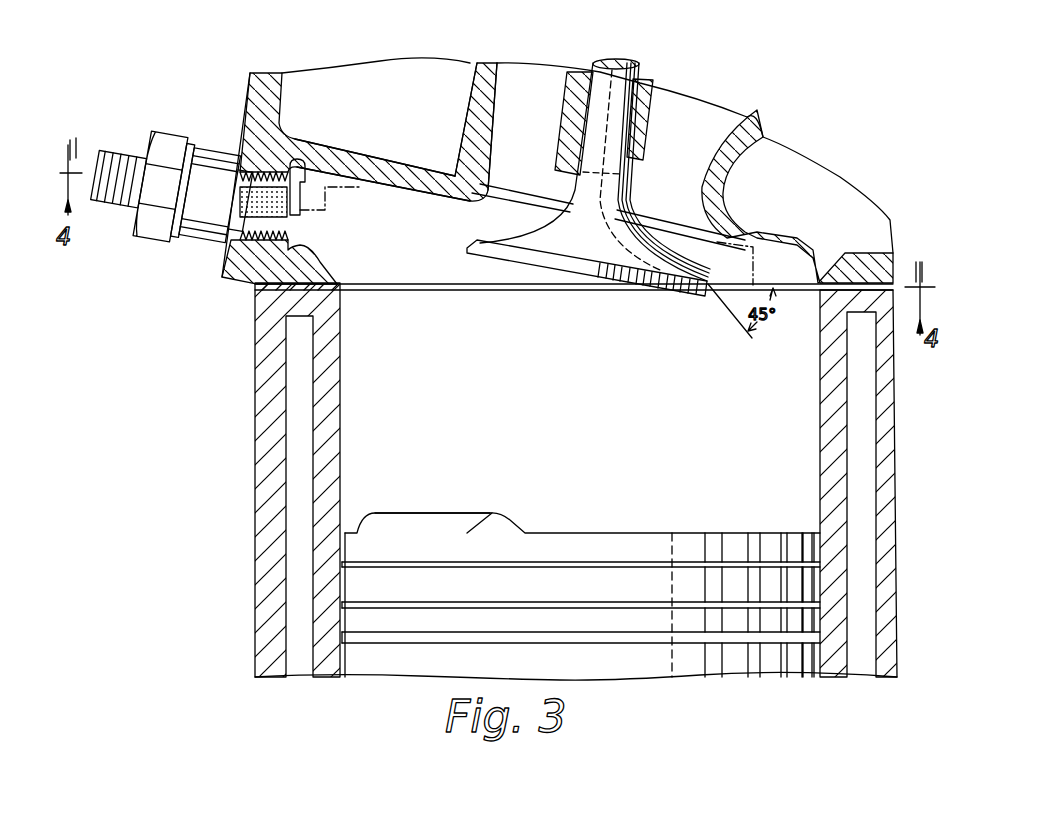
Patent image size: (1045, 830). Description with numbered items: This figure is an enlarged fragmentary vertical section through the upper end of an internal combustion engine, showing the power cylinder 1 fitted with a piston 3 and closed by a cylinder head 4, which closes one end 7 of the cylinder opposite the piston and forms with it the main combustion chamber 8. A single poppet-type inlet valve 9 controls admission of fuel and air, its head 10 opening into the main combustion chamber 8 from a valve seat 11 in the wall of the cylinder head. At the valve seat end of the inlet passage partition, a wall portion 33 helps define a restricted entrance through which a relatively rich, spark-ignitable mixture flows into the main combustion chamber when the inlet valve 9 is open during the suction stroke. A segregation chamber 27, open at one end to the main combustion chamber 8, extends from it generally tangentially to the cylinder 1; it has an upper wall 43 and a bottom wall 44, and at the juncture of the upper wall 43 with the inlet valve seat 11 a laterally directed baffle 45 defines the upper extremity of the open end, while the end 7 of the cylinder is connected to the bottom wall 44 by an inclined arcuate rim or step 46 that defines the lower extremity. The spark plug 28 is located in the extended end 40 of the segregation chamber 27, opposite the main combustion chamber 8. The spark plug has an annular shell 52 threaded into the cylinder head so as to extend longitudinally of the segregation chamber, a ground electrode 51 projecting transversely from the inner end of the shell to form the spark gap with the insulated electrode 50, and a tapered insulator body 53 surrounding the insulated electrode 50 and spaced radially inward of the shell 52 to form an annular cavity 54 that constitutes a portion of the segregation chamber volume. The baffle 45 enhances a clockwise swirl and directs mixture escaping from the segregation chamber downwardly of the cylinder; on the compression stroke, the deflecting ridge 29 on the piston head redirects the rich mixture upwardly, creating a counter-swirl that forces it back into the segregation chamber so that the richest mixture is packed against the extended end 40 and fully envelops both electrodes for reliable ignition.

The power cylinder 1 is at (815, 422).
The piston 3 is at (626, 552).
The cylinder head 4 is at (268, 88).
The end of the cylinder 7 is at (335, 281).
The main combustion chamber 8 is at (780, 248).
The inlet valve 9 is at (640, 75).
The head of the inlet valve 10 is at (566, 288).
The valve seat 11 is at (490, 190).
The segregation chamber 27 is at (373, 175).
The spark plug 28 is at (185, 155).
The deflecting ridge 29 is at (415, 530).
The wall portion 33 is at (528, 103).
The extended end of the segregation chamber 40 is at (300, 172).
The upper wall 43 is at (413, 190).
The bottom wall 44 is at (280, 291).
The baffle 45 is at (468, 182).
The inclined arcuate rim or step 46 is at (318, 262).
The insulated electrode 50 is at (310, 222).
The ground electrode 51 is at (308, 190).
The annular shell 52 is at (250, 138).
The tapered insulator body 53 is at (235, 242).
The annular cavity 54 is at (240, 198).